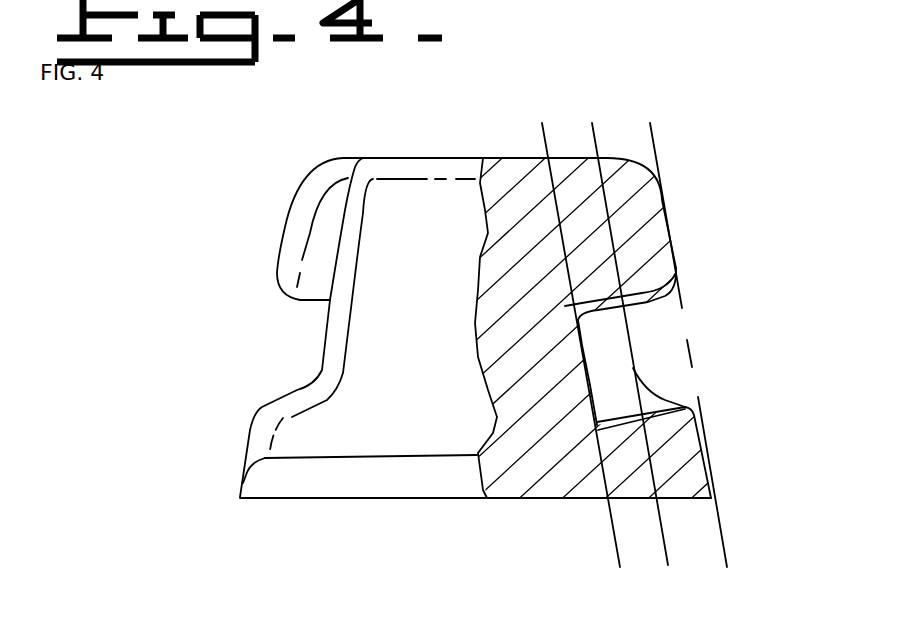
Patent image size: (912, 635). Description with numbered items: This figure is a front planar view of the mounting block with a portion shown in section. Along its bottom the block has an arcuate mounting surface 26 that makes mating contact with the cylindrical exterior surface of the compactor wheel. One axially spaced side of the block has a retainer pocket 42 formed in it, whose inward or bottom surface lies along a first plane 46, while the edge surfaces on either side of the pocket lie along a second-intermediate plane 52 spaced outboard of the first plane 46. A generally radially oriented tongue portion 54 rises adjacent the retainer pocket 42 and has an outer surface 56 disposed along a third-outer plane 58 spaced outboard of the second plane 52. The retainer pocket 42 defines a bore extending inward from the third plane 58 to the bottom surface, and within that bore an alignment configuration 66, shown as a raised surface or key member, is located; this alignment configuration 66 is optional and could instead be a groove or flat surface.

The arcuate mounting surface 26 is at (418, 498).
The tongue portion 54 is at (660, 236).
The outer surface 56 is at (675, 262).
The retainer pocket 42 is at (660, 330).
The alignment configuration 66 is at (663, 407).
The third-outer plane 58 is at (657, 143).
The first plane 46 is at (612, 527).
The second-intermediate plane 52 is at (668, 557).